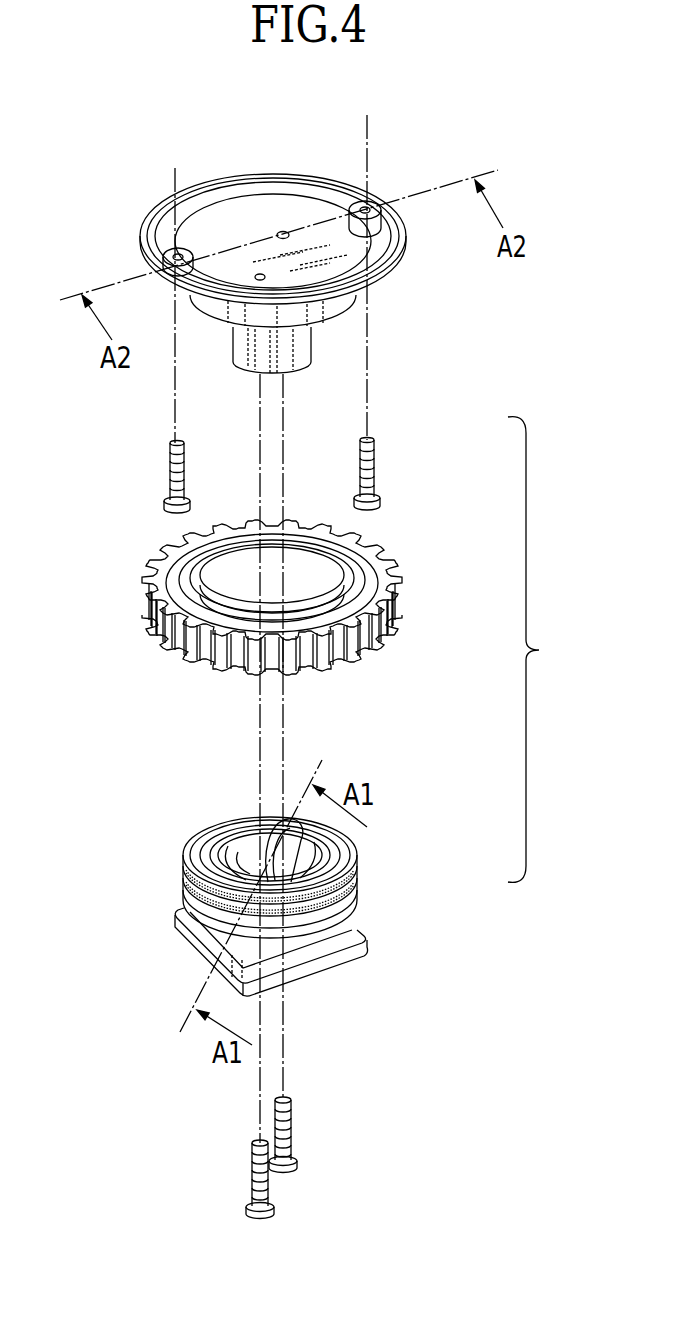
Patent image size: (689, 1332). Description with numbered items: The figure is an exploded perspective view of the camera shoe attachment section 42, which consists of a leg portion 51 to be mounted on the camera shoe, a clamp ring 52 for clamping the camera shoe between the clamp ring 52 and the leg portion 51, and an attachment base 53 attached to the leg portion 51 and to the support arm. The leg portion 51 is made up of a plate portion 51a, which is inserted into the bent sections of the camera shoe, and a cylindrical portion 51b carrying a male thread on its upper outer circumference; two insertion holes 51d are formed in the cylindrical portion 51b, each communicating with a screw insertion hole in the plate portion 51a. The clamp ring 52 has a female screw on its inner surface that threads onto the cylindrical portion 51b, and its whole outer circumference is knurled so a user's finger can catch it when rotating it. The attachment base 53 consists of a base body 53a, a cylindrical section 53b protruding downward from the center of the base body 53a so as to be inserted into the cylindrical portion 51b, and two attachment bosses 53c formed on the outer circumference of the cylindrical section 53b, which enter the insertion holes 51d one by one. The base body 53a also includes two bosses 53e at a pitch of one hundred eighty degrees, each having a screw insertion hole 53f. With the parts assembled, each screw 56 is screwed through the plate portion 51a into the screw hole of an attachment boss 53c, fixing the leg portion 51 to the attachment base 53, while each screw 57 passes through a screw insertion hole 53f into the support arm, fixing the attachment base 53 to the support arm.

The camera shoe attachment section 42 is at (540, 650).
The leg portion 51 is at (289, 920).
The plate portion 51a is at (313, 968).
The cylindrical portion 51b is at (188, 877).
The insertion holes 51d is at (255, 876).
The clamp ring 52 is at (380, 590).
The attachment base 53 is at (309, 288).
The base body 53a is at (393, 242).
The cylindrical section 53b is at (300, 358).
The attachment bosses 53c is at (270, 383).
The bosses 53e is at (176, 264).
The screw insertion hole 53f is at (285, 197).
The screw 56 is at (248, 1212).
The screw 57 is at (162, 514).